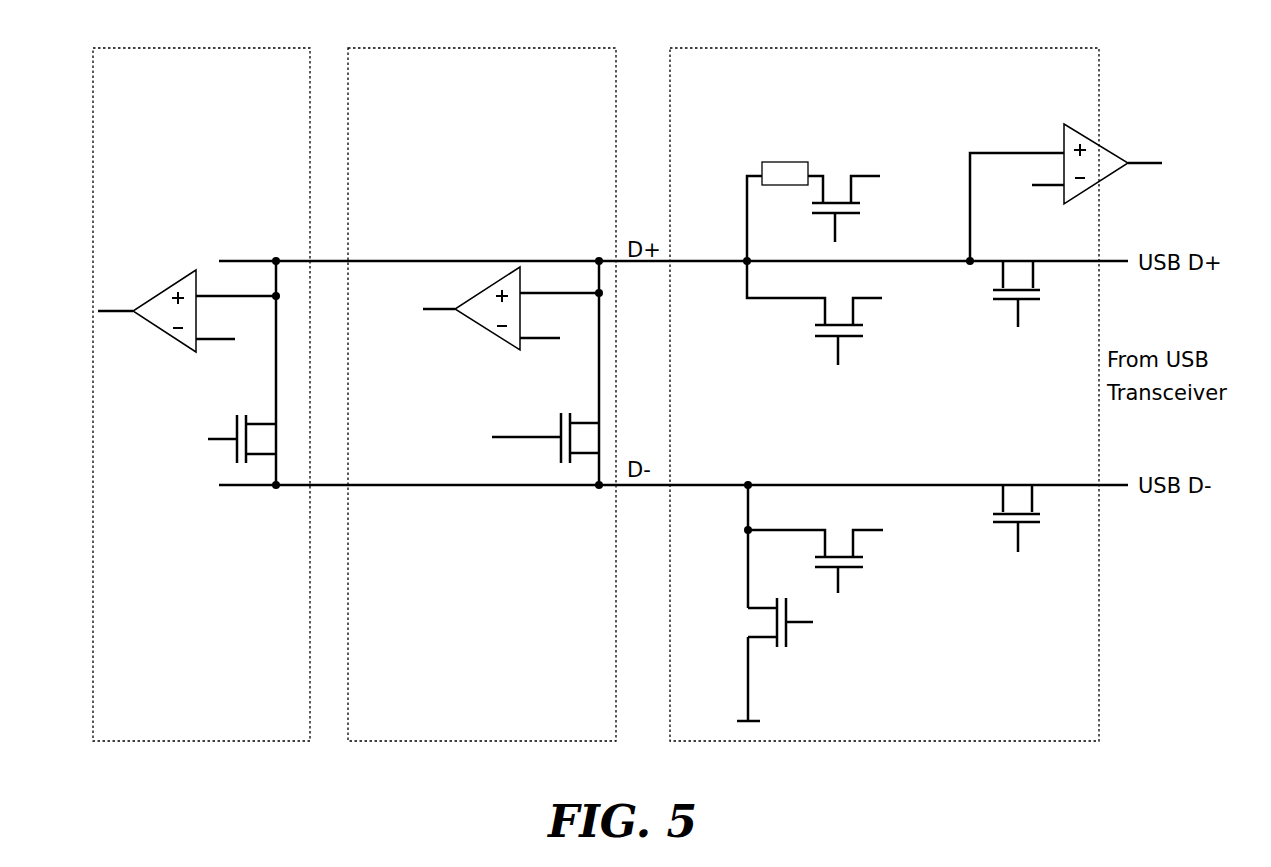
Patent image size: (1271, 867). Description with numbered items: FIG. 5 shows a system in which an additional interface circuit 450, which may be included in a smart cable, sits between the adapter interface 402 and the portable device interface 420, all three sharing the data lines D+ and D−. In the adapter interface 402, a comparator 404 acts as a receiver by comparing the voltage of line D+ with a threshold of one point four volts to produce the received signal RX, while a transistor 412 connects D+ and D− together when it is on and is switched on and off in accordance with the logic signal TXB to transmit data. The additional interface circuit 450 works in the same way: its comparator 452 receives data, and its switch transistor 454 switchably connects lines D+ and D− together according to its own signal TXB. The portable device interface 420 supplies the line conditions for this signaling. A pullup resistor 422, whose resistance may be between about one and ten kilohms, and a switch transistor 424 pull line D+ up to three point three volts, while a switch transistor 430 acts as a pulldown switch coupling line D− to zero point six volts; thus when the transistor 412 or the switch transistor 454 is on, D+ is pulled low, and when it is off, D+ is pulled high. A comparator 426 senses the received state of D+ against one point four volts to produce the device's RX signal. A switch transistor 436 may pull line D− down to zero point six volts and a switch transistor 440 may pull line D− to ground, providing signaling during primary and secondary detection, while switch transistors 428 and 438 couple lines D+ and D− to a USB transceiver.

The adapter interface 402 is at (182, 48).
The additional interface circuit 450 is at (507, 48).
The portable device interface 420 is at (822, 48).
The comparator 404 is at (158, 295).
The transistor 412 is at (235, 436).
The comparator 452 is at (470, 302).
The switch transistor 454 is at (559, 435).
The pullup resistor 422 is at (784, 186).
The switch transistor 424 is at (850, 213).
The comparator 426 is at (1100, 147).
The switch transistor 428 is at (1033, 300).
The switch transistor 430 is at (824, 302).
The switch transistor 436 is at (852, 568).
The switch transistor 438 is at (1034, 524).
The switch transistor 440 is at (748, 632).